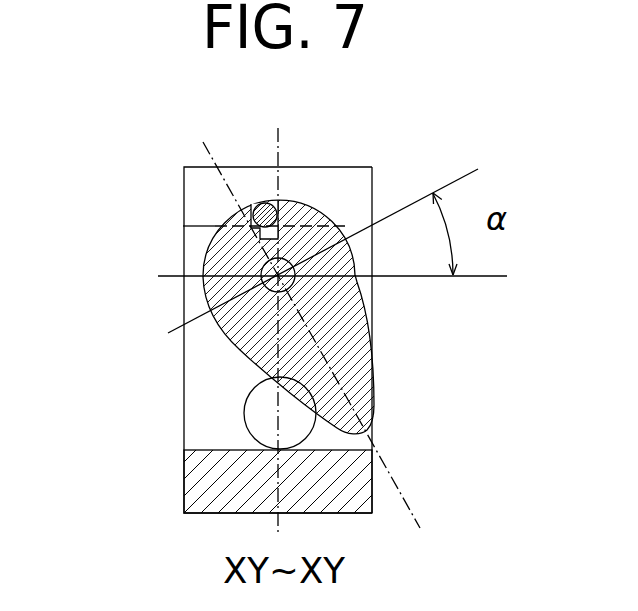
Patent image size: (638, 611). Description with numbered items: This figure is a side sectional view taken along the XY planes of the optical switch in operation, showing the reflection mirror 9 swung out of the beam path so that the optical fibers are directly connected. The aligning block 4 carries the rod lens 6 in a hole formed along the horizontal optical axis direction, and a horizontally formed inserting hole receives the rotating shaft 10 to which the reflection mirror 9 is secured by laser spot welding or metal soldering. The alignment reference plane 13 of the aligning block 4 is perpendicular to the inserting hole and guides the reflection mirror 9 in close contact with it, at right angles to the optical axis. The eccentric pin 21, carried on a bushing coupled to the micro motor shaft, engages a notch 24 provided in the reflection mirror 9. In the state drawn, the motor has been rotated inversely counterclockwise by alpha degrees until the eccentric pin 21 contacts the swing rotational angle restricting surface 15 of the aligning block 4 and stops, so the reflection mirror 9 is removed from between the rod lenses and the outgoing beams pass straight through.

The aligning block 4 is at (172, 472).
The rod lens 6 is at (243, 415).
The reflection mirror 9 is at (373, 337).
The rotating shaft 10 is at (262, 265).
The alignment reference plane 13 is at (198, 352).
The swing rotational angle restricting surface 15 is at (366, 195).
The eccentric pin 21 is at (258, 203).
The notch 24 is at (183, 225).